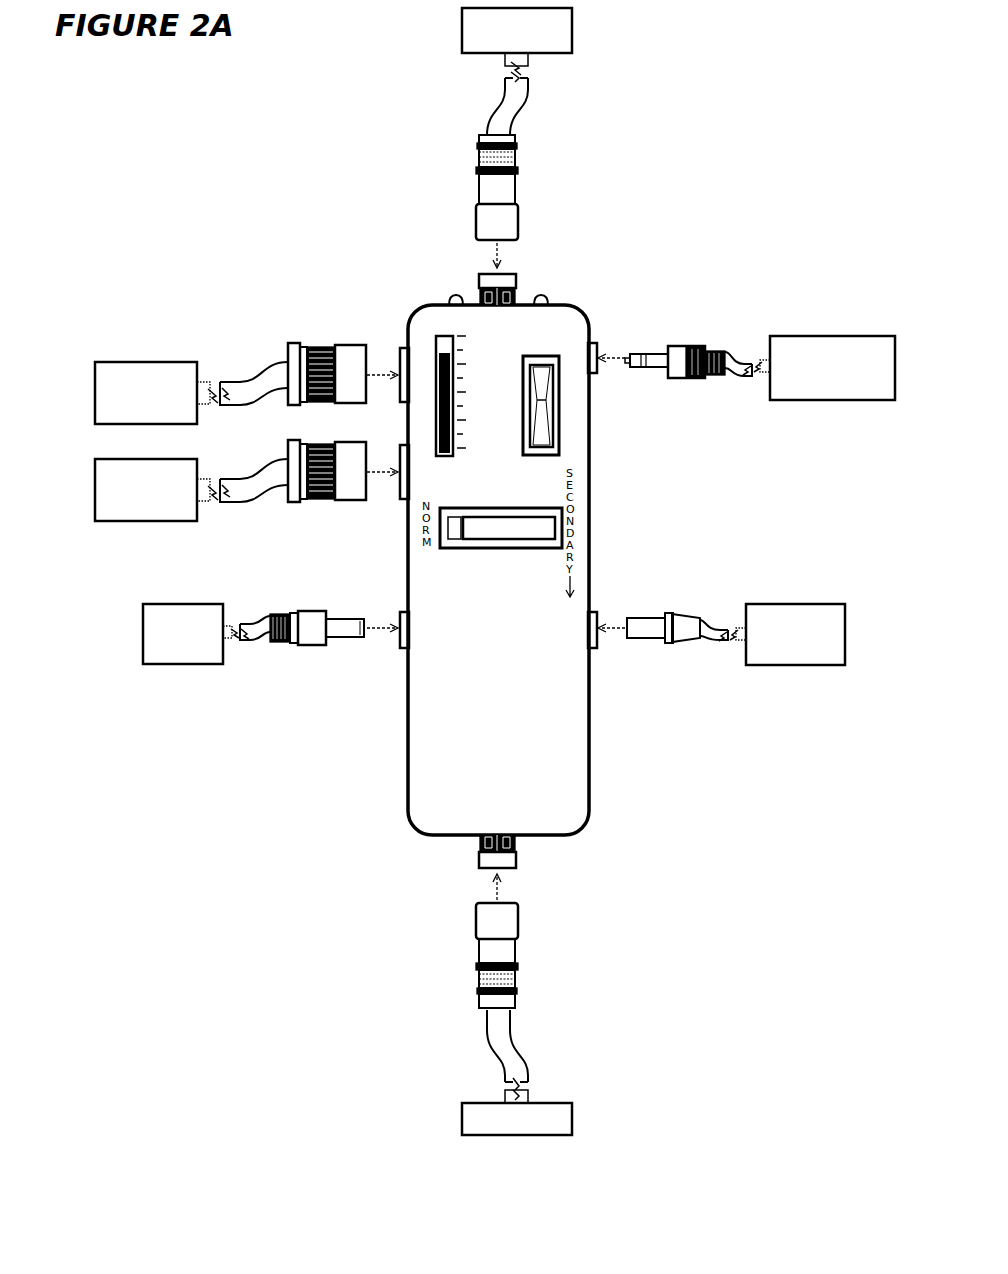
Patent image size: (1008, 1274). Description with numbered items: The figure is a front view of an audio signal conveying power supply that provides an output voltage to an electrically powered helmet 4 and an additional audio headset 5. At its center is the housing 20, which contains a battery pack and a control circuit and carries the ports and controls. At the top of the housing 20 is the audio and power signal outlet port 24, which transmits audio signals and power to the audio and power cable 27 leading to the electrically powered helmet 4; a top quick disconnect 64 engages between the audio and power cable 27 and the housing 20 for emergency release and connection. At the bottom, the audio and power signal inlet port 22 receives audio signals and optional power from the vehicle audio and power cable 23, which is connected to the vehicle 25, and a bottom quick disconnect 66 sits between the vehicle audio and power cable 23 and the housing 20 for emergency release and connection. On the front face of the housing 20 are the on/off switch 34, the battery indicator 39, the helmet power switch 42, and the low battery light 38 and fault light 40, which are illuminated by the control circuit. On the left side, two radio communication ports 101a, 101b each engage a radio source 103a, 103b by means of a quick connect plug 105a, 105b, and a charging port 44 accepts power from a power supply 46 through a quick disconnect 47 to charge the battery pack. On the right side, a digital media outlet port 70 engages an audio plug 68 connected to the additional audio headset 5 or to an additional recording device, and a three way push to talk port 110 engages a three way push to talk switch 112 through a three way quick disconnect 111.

The electrically powered helmet 4 is at (570, 36).
The additional audio headset 5 is at (836, 336).
The housing 20 is at (418, 312).
The audio and power signal inlet port 22 is at (478, 862).
The vehicle audio and power cable 23 is at (488, 1046).
The audio and power signal outlet port 24 is at (478, 280).
The vehicle 25 is at (570, 1121).
The audio and power cable 27 is at (492, 100).
The on/off switch 34 is at (556, 356).
The low battery light 38 is at (544, 300).
The battery indicator 39 is at (455, 388).
The fault light 40 is at (452, 302).
The helmet power switch 42 is at (500, 508).
The charging port 44 is at (402, 612).
The power supply 46 is at (182, 604).
The quick disconnect 47 is at (306, 612).
The top quick disconnect 64 is at (474, 222).
The bottom quick disconnect 66 is at (474, 918).
The audio plug 68 is at (678, 345).
The digital media outlet port 70 is at (598, 348).
The radio communication port 101a is at (403, 348).
The radio communication port 101b is at (403, 445).
The radio source 103a is at (148, 362).
The radio source 103b is at (148, 459).
The quick connect plug 105a is at (352, 343).
The quick connect plug 105b is at (352, 440).
The three way push to talk port 110 is at (596, 612).
The three way quick disconnect 111 is at (674, 614).
The three way push to talk switch 112 is at (798, 604).